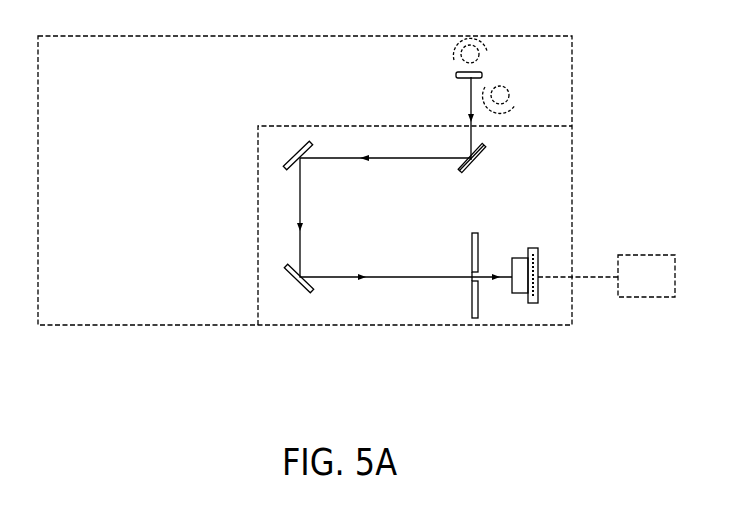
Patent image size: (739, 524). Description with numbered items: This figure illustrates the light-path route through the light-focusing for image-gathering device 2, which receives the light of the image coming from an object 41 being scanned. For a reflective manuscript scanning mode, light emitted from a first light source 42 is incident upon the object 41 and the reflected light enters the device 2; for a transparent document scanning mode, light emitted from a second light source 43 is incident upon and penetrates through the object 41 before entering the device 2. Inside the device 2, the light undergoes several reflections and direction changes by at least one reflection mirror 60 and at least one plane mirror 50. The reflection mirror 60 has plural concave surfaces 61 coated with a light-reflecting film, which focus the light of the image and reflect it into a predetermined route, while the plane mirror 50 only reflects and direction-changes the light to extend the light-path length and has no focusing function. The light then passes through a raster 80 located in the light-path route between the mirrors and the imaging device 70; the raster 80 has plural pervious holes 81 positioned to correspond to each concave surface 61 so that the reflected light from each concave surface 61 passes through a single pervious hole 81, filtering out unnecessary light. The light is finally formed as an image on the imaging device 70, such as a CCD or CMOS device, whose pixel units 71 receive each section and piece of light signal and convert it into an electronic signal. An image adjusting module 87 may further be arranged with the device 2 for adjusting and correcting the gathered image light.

The light-focusing for image-gathering device 2 is at (258, 226).
The object being scanned 41 is at (456, 75).
The first light source 42 is at (515, 105).
The second light source 43 is at (487, 51).
The plane mirror 50 is at (285, 158).
The reflection mirror 60 is at (484, 150).
The concave surface 61 is at (458, 160).
The imaging device 70 is at (532, 303).
The pixel unit 71 is at (538, 250).
The raster 80 is at (476, 232).
The pervious hole 81 is at (472, 277).
The image adjusting module 87 is at (660, 255).